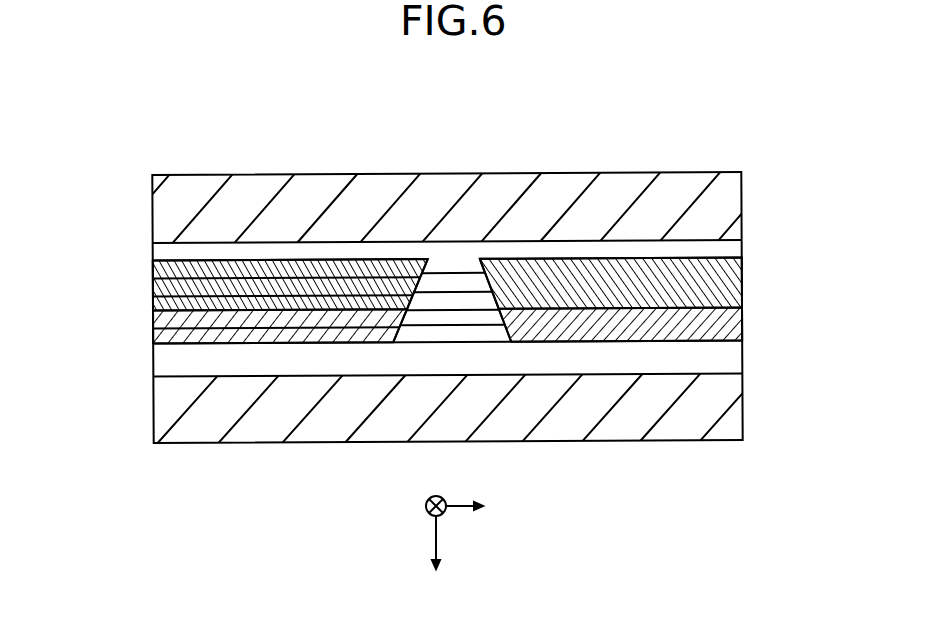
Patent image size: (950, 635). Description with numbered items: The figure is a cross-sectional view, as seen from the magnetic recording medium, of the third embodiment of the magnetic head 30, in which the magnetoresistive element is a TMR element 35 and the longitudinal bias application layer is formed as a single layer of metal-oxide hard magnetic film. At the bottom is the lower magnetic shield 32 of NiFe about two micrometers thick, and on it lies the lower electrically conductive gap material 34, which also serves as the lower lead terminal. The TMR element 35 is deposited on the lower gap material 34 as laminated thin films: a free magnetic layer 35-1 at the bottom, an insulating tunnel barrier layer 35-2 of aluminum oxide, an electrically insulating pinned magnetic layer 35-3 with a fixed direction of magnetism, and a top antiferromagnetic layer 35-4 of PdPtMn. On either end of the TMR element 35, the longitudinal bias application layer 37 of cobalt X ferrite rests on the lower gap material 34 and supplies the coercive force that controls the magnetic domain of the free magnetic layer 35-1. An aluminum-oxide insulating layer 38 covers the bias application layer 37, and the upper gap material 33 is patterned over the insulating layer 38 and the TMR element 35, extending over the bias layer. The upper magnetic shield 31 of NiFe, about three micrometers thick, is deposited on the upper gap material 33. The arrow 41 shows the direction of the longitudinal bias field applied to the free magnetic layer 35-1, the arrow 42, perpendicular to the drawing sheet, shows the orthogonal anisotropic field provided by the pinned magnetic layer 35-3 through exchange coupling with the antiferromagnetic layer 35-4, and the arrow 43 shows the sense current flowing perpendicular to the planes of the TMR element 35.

The magnetic head 30 is at (663, 124).
The upper magnetic shield 31 is at (732, 214).
The lower magnetic shield 32 is at (728, 409).
The upper gap material 33 is at (730, 248).
The lower electrically conductive gap material 34 is at (730, 360).
The TMR element 35 is at (58, 243).
The free magnetic layer 35-1 is at (432, 336).
The insulating tunnel barrier layer 35-2 is at (436, 318).
The pinned magnetic layer 35-3 is at (438, 301).
The antiferromagnetic layer 35-4 is at (438, 285).
The longitudinal bias application layer 37 is at (730, 323).
The insulating layer 38 is at (730, 286).
The arrow 41 is at (481, 506).
The arrow 42 is at (423, 491).
The arrow 43 is at (439, 559).